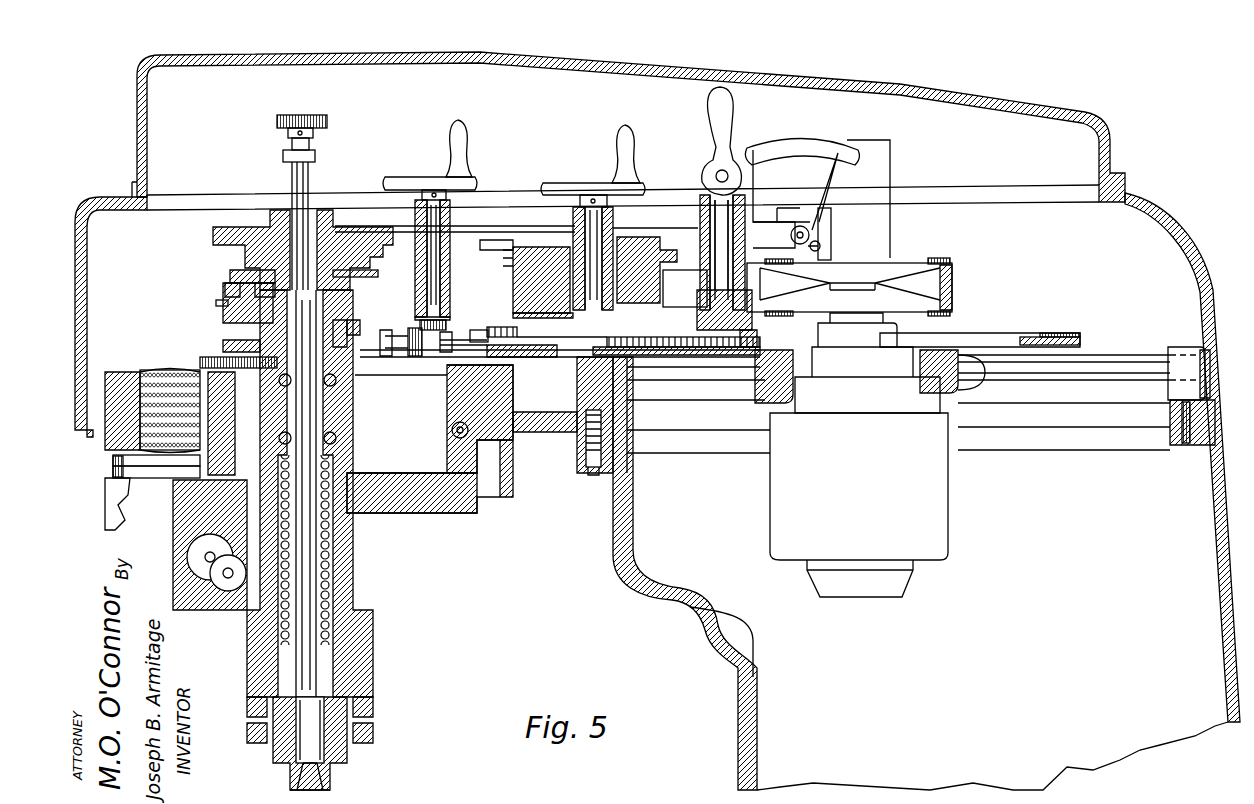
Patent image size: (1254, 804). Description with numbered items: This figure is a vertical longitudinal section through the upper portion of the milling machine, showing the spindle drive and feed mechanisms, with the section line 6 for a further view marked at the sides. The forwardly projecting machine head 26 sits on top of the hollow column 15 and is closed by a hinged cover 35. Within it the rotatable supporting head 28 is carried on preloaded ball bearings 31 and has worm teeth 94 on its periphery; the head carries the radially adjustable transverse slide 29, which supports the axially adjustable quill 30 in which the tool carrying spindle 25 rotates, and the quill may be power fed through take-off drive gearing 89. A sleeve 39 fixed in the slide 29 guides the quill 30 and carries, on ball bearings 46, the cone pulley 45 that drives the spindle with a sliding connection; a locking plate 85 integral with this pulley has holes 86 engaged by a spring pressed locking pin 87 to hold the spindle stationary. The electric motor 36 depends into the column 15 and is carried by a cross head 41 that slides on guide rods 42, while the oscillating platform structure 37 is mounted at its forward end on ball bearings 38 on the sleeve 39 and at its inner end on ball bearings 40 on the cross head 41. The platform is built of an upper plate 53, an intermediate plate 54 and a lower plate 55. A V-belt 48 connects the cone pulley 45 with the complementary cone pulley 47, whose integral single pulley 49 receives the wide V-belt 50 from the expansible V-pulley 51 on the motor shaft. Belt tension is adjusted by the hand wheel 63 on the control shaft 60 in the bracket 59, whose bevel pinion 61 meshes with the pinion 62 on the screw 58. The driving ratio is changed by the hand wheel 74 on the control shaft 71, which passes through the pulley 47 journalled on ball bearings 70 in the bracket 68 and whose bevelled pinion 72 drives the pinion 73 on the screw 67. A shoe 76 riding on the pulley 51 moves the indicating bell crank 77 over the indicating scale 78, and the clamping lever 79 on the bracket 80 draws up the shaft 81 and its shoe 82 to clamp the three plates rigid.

The section line 6- 6 is at (80, 216).
The column 15 is at (612, 567).
The tool carrying spindle 25 is at (330, 788).
The machine head 26 is at (1193, 258).
The rotatable supporting head 28 is at (110, 470).
The transverse slide 29 is at (380, 478).
The quill 30 is at (350, 763).
The ball bearings 31 is at (138, 370).
The hinged cover 35 is at (973, 95).
The electric motor 36 is at (770, 493).
The oscillating platform structure 37 is at (1070, 321).
The ball bearings 38 is at (225, 342).
The sleeve 39 is at (350, 416).
The ball bearings 40 is at (950, 348).
The cross head 41 is at (760, 400).
The guide rods 42 is at (1105, 355).
The cone pulley 45 is at (225, 230).
The ball bearings 46 is at (345, 322).
The cone pulley 47 is at (667, 234).
The V-belt 48 is at (495, 240).
The single pulley 49 is at (520, 313).
The V-belt 50 is at (512, 290).
The expansible V-pulley 51 is at (915, 268).
The upper plate 53 is at (357, 340).
The intermediate plate 54 is at (535, 358).
The lower plate 55 is at (978, 372).
The screw 58 is at (479, 326).
The bracket 59 is at (415, 272).
The control shaft 60 is at (427, 258).
The bevel pinion 61 is at (420, 322).
The bevel pinion 62 is at (415, 356).
The hand wheel 63 is at (405, 180).
The screw 67 is at (760, 340).
The bracket 68 is at (535, 333).
The ball bearings 70 is at (627, 245).
The control shaft 71 is at (572, 218).
The bevelled pinion 72 is at (617, 337).
The bevelled pinion 73 is at (580, 362).
The hand wheel 74 is at (580, 180).
The shoe 76 is at (830, 263).
The indicating bell crank 77 is at (826, 242).
The indicating scale 78 is at (803, 138).
The clamping lever 79 is at (712, 120).
The bracket 80 is at (705, 297).
The shaft 81 is at (712, 245).
The shoe 82 is at (720, 380).
The locking plate 85 is at (222, 283).
The holes 86 is at (238, 272).
The locking pin 87 is at (225, 290).
The take-off drive gearing 89 is at (220, 360).
The worm teeth 94 is at (178, 378).